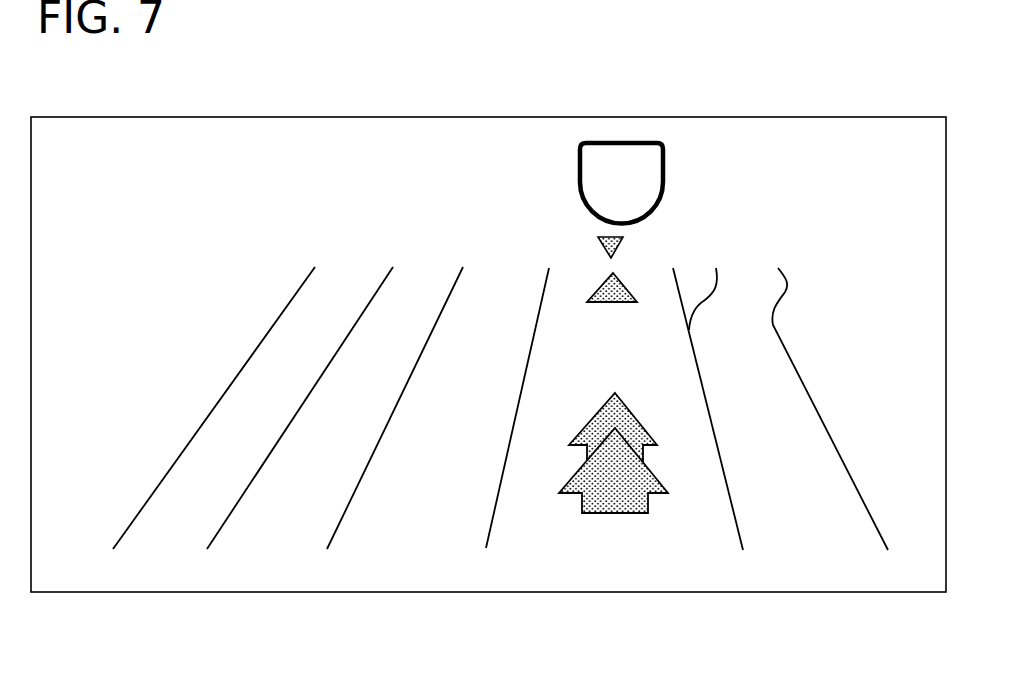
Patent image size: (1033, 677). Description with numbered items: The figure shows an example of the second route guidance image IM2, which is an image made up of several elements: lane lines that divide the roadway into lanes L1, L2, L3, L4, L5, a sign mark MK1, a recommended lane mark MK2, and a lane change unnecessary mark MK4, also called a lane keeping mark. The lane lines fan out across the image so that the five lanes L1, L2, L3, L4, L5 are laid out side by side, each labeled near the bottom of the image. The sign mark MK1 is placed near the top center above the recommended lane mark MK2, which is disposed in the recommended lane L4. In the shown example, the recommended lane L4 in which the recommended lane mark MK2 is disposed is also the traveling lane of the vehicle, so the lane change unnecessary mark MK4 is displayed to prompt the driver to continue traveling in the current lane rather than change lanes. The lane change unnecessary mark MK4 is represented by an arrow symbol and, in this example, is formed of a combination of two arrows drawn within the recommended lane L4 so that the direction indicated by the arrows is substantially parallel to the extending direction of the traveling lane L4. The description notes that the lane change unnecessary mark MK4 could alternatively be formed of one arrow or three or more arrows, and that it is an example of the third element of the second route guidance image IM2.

The second route guidance image IM2 is at (904, 117).
The sign mark MK1 is at (631, 122).
The recommended lane mark MK2 is at (588, 268).
The lane change unnecessary mark MK4 is at (560, 428).
The lane L1 is at (179, 557).
The lane L2 is at (285, 557).
The lane L3 is at (427, 557).
The recommended lane L4 is at (632, 557).
The lane L5 is at (834, 557).